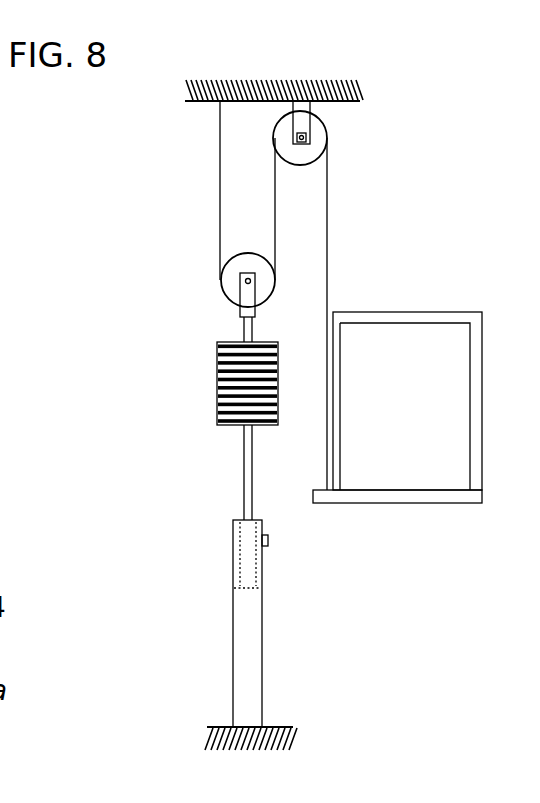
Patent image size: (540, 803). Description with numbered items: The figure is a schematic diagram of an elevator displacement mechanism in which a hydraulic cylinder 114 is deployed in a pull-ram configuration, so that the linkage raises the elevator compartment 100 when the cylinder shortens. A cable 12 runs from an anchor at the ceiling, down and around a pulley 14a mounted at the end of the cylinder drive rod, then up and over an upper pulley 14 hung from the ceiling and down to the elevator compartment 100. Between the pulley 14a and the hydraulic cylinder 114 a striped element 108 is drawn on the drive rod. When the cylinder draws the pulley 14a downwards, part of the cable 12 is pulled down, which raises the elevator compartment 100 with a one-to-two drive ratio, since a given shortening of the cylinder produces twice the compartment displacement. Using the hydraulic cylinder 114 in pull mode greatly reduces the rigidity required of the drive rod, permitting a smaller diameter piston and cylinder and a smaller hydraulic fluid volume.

The cable 12 is at (327, 237).
The upper pulley 14 is at (306, 138).
The pulley 14a is at (221, 272).
The elevator compartment 100 is at (407, 340).
The spring damper element 108 is at (250, 392).
The hydraulic cylinder 114 is at (245, 670).